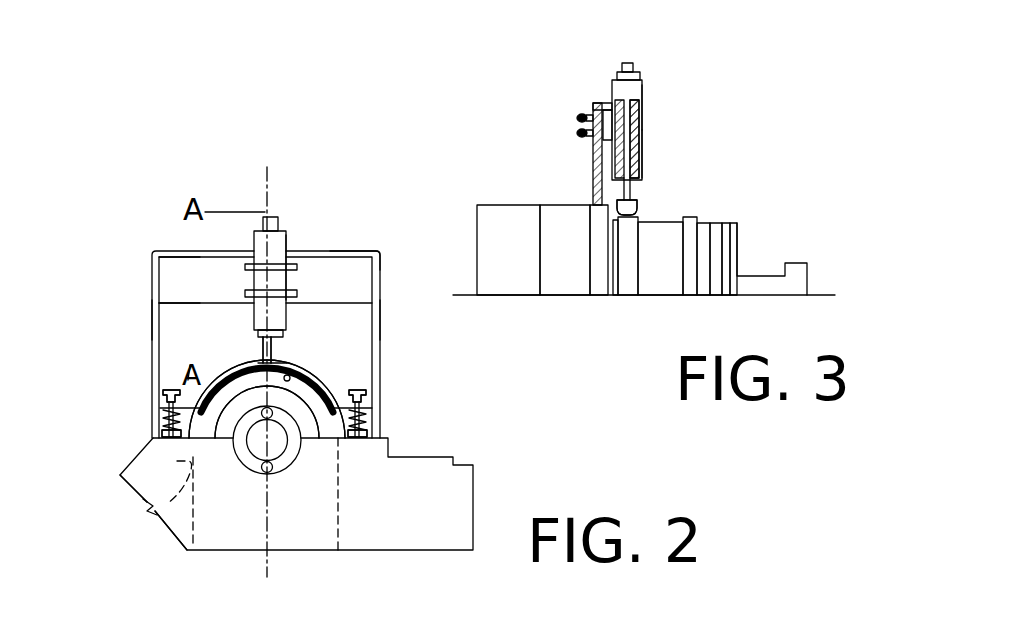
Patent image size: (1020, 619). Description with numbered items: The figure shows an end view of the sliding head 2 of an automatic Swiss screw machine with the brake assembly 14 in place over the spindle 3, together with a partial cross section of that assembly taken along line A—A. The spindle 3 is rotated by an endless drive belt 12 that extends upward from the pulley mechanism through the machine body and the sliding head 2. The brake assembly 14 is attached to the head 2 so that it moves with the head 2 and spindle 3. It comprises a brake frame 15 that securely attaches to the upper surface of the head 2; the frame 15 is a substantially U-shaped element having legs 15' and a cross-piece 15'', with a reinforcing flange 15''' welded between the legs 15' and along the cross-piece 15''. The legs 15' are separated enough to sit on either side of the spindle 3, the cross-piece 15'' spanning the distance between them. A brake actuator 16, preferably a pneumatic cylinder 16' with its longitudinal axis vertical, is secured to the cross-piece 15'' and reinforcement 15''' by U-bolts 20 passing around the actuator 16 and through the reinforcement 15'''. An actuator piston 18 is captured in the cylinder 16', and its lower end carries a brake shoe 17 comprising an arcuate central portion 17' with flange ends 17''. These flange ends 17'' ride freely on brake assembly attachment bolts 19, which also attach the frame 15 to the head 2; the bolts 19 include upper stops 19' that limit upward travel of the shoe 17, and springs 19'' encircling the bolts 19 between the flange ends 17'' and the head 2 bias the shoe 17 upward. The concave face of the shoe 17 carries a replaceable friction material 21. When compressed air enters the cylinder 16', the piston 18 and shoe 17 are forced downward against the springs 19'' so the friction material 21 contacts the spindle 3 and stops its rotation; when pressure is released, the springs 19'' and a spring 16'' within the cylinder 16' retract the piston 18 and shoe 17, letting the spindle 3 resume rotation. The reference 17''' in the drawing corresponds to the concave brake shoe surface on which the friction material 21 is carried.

In FIG. 2, the sliding head 2 is at (460, 515).
In FIG. 2, the spindle 3 is at (300, 445).
In FIG. 3, the spindle 3 is at (740, 242).
In FIG. 2, the endless drive belt 12 is at (150, 506).
In FIG. 3, the endless drive belt 12 is at (672, 282).
In FIG. 2, the brake assembly 14 is at (348, 206).
In FIG. 3, the brake assembly 14 is at (648, 58).
In FIG. 2, the brake frame 15 is at (291, 319).
In FIG. 3, the brake frame 15 is at (559, 154).
In FIG. 2, the legs 15' is at (270, 305).
In FIG. 2, the cross-piece 15'' is at (369, 223).
In FIG. 2, the reinforcing flange 15''' is at (152, 265).
In FIG. 2, the brake actuator 16 is at (282, 260).
In FIG. 3, the brake actuator 16 is at (657, 115).
In FIG. 2, the pneumatic cylinder 16' is at (318, 250).
In FIG. 3, the pneumatic cylinder 16' is at (677, 107).
In FIG. 3, the spring 16'' is at (709, 154).
In FIG. 2, the brake shoe 17 is at (306, 385).
In FIG. 3, the brake shoe 17 is at (685, 188).
In FIG. 2, the arcuate central portion 17' is at (326, 399).
In FIG. 2, the flange ends 17'' is at (285, 404).
In FIG. 2, the outer shell surface 17''' is at (270, 377).
In FIG. 2, the actuator piston 18 is at (262, 346).
In FIG. 3, the actuator piston 18 is at (640, 183).
In FIG. 2, the brake assembly attachment bolts 19 is at (266, 432).
In FIG. 2, the upper stops 19' is at (281, 388).
In FIG. 2, the springs 19'' is at (298, 434).
In FIG. 2, the U-bolts 20 is at (247, 270).
In FIG. 3, the U-bolts 20 is at (645, 150).
In FIG. 2, the friction material 21 is at (257, 363).
In FIG. 3, the friction material 21 is at (640, 210).